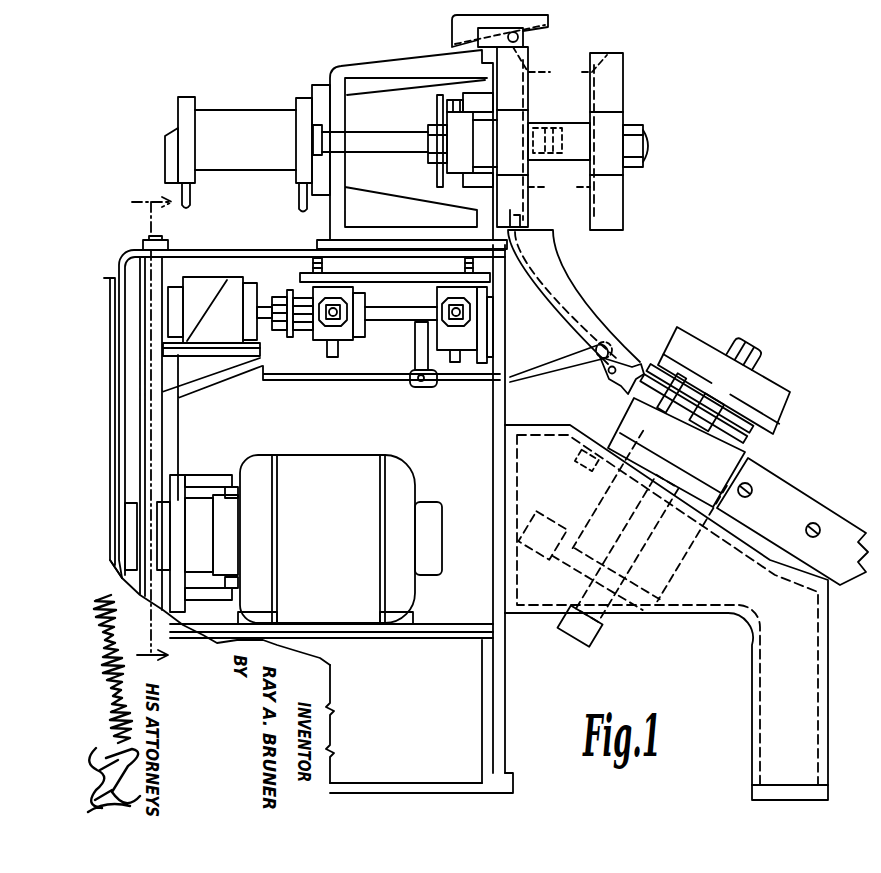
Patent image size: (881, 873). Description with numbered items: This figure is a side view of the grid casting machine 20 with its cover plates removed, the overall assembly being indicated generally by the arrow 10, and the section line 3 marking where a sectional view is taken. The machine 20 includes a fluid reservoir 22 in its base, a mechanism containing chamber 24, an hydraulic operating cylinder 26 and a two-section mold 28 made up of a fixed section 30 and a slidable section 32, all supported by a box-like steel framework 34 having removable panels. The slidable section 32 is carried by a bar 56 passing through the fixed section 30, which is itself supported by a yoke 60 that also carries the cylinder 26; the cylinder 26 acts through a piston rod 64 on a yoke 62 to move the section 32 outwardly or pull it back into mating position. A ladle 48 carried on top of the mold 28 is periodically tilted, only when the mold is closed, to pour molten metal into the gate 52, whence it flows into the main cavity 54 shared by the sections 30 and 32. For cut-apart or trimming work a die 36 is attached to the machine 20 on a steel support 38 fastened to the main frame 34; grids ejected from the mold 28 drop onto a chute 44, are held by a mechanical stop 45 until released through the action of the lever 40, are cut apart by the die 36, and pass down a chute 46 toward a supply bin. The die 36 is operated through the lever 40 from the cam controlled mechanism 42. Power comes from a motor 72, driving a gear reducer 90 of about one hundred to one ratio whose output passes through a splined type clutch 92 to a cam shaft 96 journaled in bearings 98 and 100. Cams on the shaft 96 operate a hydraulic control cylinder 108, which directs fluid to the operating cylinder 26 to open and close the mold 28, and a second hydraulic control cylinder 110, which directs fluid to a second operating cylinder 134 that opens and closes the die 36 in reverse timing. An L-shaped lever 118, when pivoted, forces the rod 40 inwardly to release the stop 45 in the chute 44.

The section line 3- 3 is at (152, 431).
The machine 10 is at (372, 360).
The grid casting machine 20 is at (502, 768).
The fluid reservoir 22 is at (477, 702).
The mechanism containing chamber 24 is at (493, 404).
The hydraulic operating cylinder 26 is at (233, 112).
The two-section mold 28 is at (628, 84).
The mold section 30 is at (532, 67).
The mold section 32 is at (621, 55).
The steel framework 34 is at (128, 256).
The die 36 is at (797, 397).
The steel support 38 is at (828, 688).
The lever 40 is at (517, 377).
The cam controlled mechanism 42 is at (313, 292).
The chute 44 is at (570, 284).
The mechanical stop 45 is at (608, 352).
The chute 46 is at (848, 513).
The ladle 48 is at (452, 21).
The gate 52 is at (560, 68).
The main cavity 54 is at (559, 192).
The bar 56 is at (588, 130).
The yoke 60 is at (344, 72).
The yoke 62 is at (455, 118).
The piston rod 64 is at (377, 153).
The motor 72 is at (305, 460).
The gear reducer 90 is at (212, 283).
The splined type clutch 92 is at (315, 365).
The cam shaft 96 is at (385, 320).
The bearing 98 is at (378, 273).
The bearing 100 is at (490, 318).
The hydraulic control cylinder 108 is at (345, 343).
The second hydraulic control cylinder 110 is at (462, 373).
The L-shaped lever 118 is at (414, 382).
The second operating cylinder 134 is at (668, 556).